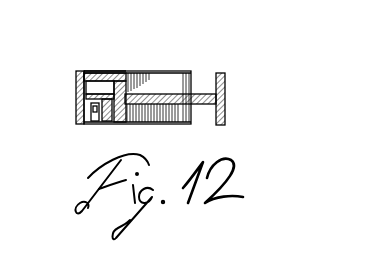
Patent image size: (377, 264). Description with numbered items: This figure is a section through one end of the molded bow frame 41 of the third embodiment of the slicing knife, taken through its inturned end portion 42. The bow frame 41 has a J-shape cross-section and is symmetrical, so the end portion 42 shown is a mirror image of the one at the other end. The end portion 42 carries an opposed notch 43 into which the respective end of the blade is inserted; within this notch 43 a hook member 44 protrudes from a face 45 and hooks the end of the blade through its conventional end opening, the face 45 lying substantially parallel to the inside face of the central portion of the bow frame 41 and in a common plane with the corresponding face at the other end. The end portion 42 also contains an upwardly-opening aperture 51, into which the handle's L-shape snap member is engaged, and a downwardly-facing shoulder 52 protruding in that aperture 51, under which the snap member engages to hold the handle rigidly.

The bow frame 41 is at (224, 94).
The inturned end portion 42 is at (172, 96).
The notch 43 is at (90, 108).
The hook member 44 is at (83, 122).
The face 45 is at (97, 122).
The upwardly-opening aperture 51 is at (93, 71).
The downwardly-facing shoulder 52 is at (107, 80).